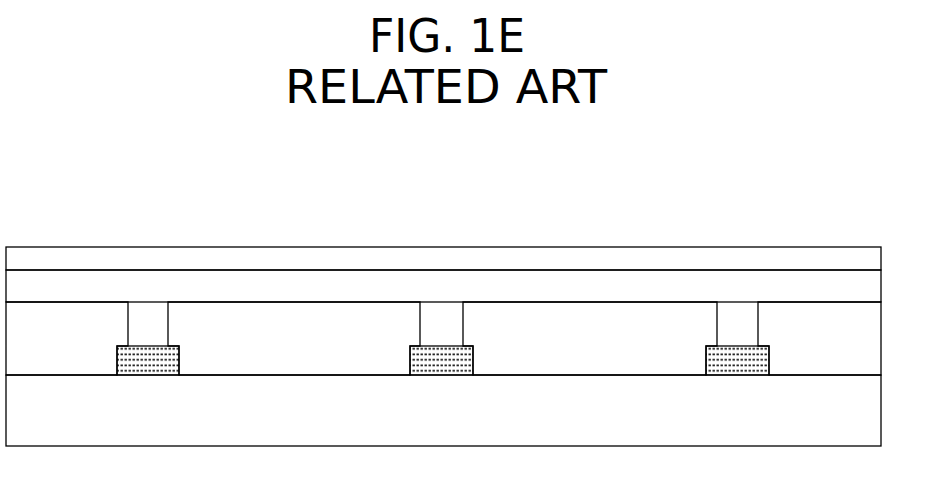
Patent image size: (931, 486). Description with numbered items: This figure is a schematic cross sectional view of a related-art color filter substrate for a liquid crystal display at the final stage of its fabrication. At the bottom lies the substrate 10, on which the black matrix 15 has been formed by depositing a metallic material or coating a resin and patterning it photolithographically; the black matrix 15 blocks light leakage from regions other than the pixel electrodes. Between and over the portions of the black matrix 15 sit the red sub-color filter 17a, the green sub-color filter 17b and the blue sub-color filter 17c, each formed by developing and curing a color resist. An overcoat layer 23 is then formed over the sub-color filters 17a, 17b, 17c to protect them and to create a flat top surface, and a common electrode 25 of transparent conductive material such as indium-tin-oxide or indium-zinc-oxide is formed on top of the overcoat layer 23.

The substrate 10 is at (427, 429).
The black matrix 15 is at (440, 348).
The red sub-color filter 17a is at (352, 320).
The green sub-color filter 17b is at (548, 327).
The blue sub-color filter 17c is at (88, 320).
The overcoat layer 23 is at (743, 290).
The common electrode 25 is at (668, 262).